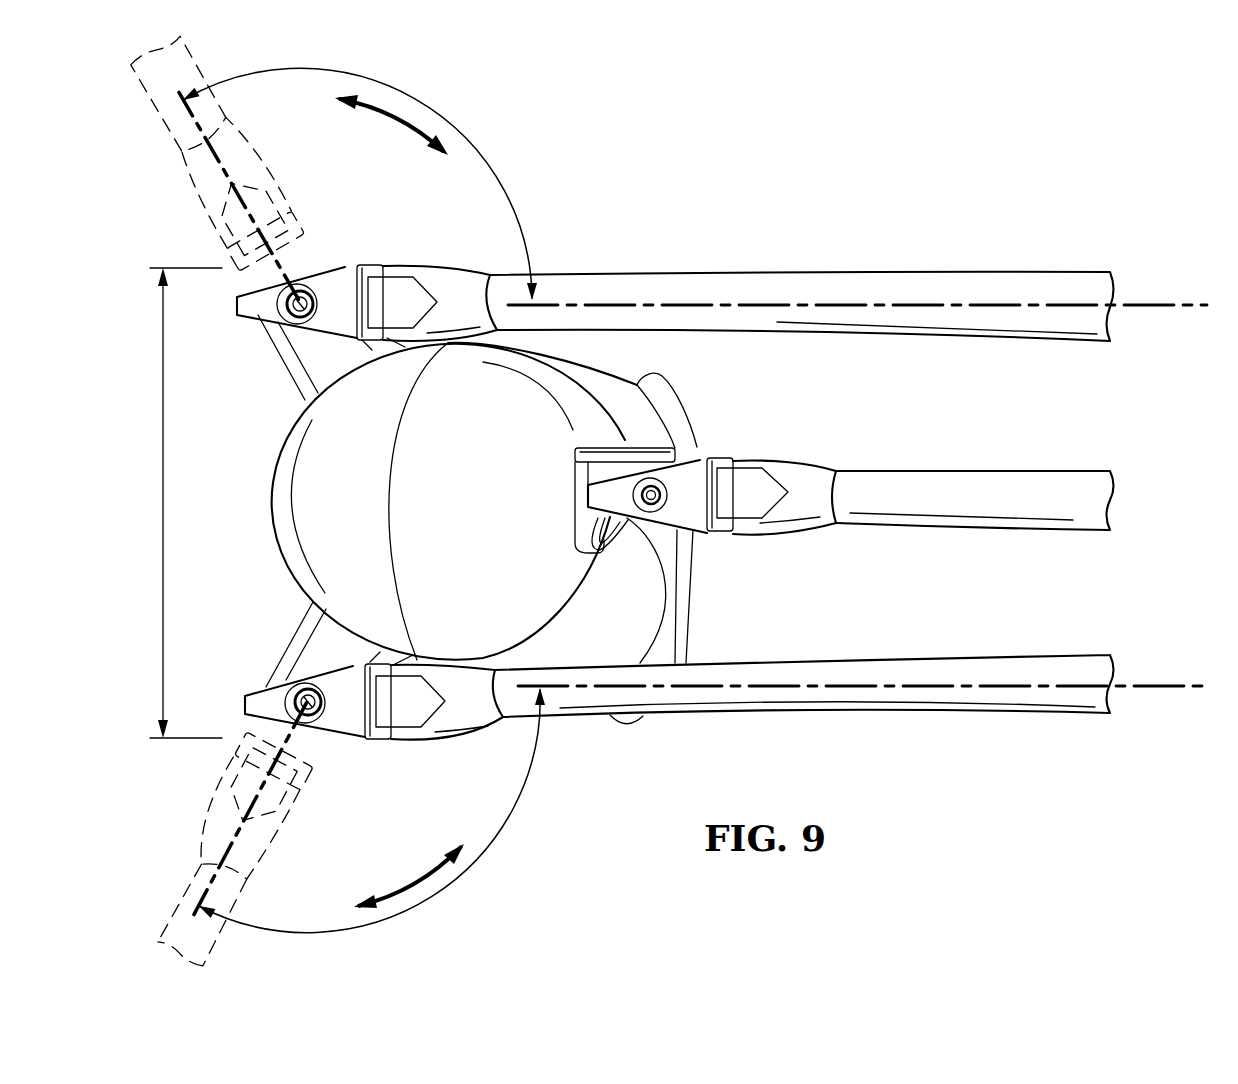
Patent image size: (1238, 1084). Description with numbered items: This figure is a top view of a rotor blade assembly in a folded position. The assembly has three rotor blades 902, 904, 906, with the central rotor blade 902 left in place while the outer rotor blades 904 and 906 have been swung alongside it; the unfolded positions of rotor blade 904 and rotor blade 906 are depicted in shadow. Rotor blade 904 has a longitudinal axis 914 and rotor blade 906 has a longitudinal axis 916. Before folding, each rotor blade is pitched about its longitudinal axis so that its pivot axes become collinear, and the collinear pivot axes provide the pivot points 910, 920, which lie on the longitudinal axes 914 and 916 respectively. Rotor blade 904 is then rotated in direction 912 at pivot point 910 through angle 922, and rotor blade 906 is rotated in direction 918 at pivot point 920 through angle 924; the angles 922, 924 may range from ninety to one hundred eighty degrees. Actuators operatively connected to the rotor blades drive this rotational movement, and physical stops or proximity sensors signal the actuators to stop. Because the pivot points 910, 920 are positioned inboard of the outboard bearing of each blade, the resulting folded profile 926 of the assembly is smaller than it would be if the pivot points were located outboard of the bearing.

The rotor blade 902 is at (969, 471).
The rotor blade 904 is at (296, 225).
The rotor blade 906 is at (323, 766).
The pivot point 910 is at (281, 304).
The direction 912 is at (391, 116).
The longitudinal axis 914 is at (1178, 304).
The longitudinal axis 916 is at (1185, 691).
The direction 918 is at (418, 884).
The pivot point 920 is at (290, 695).
The angle 922 is at (418, 103).
The angle 924 is at (437, 896).
The folded profile 926 is at (157, 490).